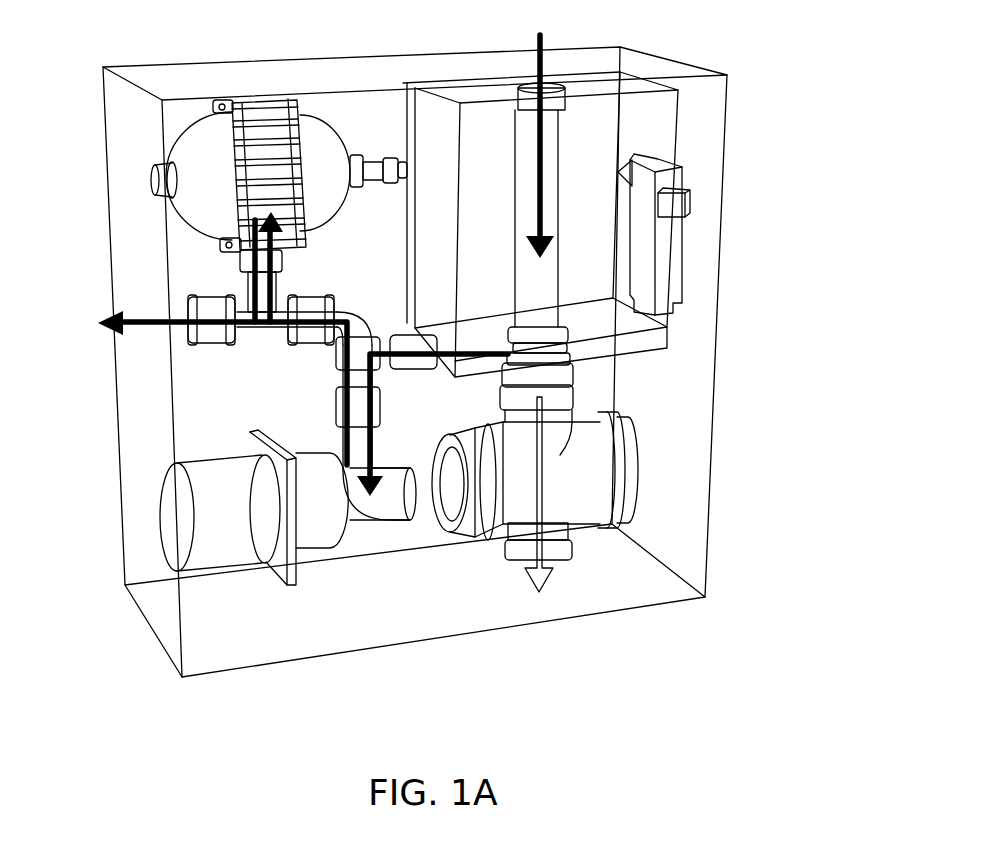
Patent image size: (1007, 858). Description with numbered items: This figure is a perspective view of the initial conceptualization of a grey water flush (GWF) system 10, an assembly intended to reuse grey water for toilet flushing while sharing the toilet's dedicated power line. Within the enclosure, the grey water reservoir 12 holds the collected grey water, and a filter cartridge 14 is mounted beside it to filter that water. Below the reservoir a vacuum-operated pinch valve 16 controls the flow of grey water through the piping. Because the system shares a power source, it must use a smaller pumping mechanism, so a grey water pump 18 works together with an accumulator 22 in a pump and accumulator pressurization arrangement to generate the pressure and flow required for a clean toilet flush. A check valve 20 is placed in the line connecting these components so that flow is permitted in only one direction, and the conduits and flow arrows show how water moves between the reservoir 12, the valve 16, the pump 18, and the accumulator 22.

The GWF system 10 is at (776, 95).
The grey water reservoir 12 is at (482, 168).
The filter cartridge 14 is at (548, 210).
The vacuum-operated pinch valve 16 is at (582, 477).
The grey water pump 18 is at (310, 512).
The check valve 20 is at (274, 326).
The accumulator 22 is at (205, 175).